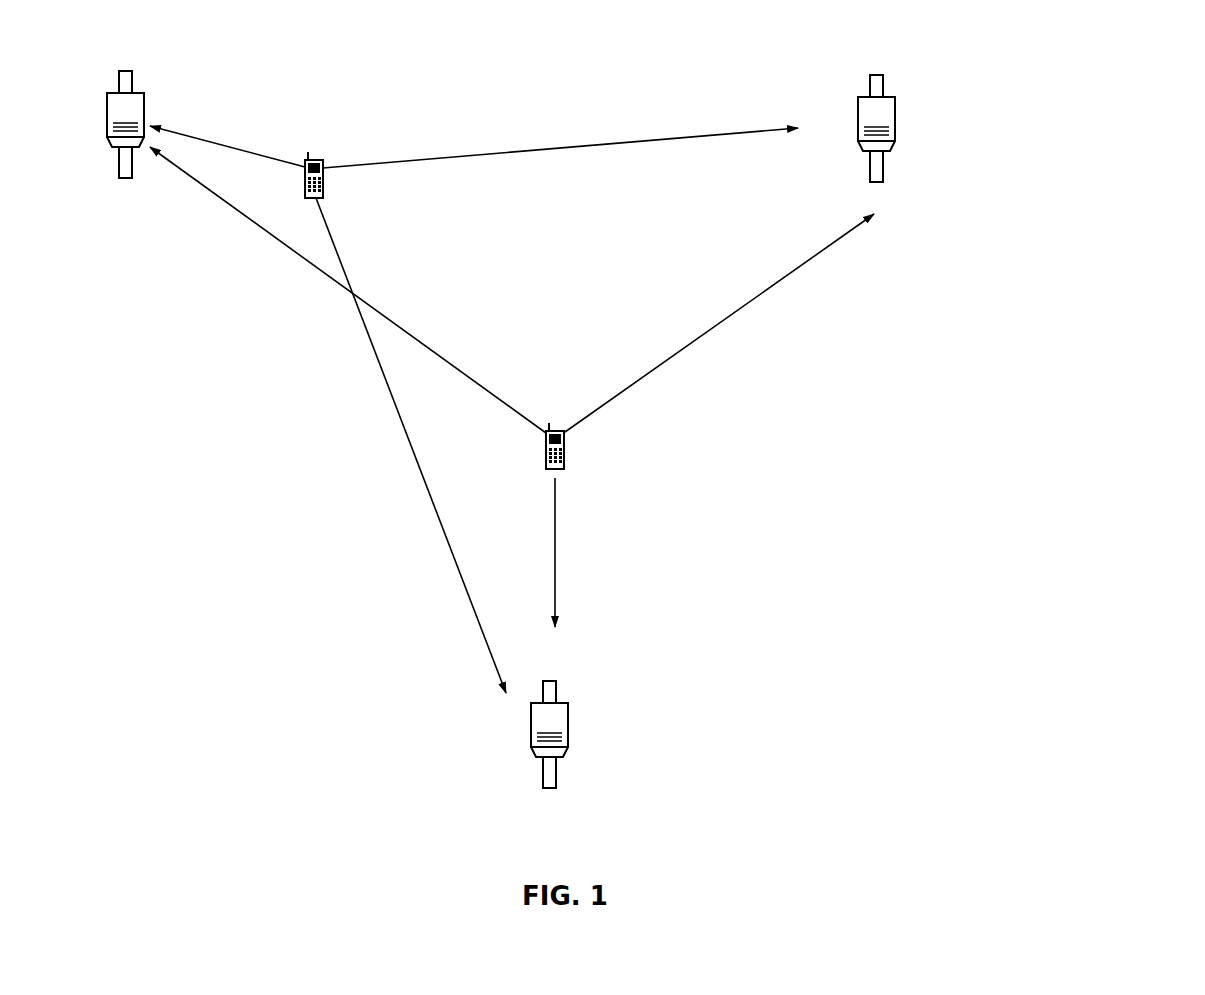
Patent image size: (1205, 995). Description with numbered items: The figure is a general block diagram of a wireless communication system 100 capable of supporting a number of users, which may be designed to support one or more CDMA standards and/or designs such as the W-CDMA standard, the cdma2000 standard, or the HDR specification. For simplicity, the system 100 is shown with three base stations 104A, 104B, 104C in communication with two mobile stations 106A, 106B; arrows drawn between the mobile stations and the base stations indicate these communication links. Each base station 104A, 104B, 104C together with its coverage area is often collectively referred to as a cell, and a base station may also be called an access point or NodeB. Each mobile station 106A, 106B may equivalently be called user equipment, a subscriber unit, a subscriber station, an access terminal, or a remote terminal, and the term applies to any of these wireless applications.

The wireless communication system 100 is at (1116, 114).
The base station 104A is at (147, 92).
The base station 104B is at (895, 97).
The base station 104C is at (568, 705).
The mobile station 106A is at (325, 160).
The mobile station 106B is at (547, 471).